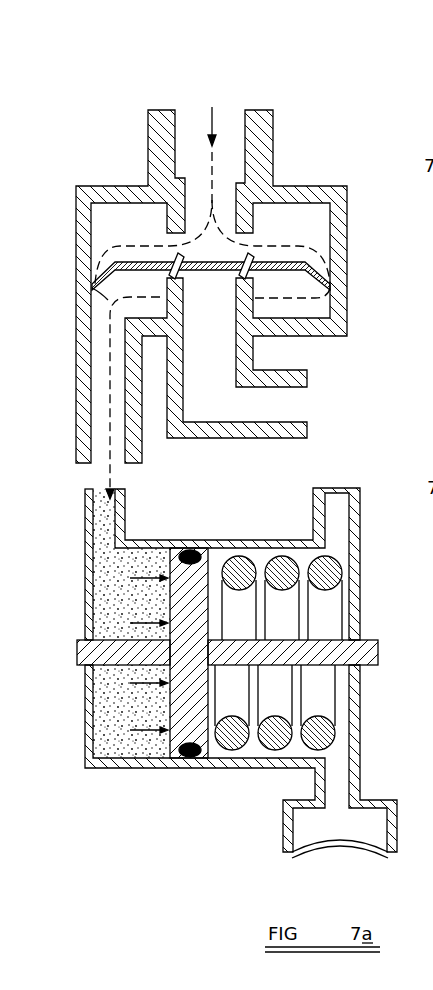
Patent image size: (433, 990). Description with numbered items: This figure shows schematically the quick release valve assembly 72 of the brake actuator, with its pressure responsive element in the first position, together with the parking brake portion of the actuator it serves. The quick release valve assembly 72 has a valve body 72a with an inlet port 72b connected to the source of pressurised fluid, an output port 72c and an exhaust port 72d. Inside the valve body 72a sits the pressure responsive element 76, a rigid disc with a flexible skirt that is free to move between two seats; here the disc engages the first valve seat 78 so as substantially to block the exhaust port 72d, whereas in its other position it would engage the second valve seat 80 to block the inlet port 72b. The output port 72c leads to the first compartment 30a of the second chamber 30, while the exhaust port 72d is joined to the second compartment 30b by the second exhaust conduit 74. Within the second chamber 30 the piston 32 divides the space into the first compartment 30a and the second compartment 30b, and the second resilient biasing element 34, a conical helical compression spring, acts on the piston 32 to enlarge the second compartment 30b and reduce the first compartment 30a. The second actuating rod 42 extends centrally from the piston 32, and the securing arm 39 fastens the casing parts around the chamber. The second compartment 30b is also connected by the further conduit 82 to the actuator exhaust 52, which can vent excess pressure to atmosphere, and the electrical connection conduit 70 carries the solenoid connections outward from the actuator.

The quick release valve assembly 72 is at (213, 270).
The valve body 72a is at (75, 232).
The inlet port 72b is at (160, 155).
The output port 72c is at (75, 417).
The exhaust port 72d is at (273, 368).
The first valve seat 78 is at (277, 262).
The second valve seat 80 is at (247, 238).
The pressure responsive element 76 is at (92, 288).
The second exhaust conduit 74 is at (355, 512).
The electrical connection conduit 70 is at (85, 523).
The second chamber 30 is at (233, 768).
The first compartment 30a is at (123, 757).
The second compartment 30b is at (257, 752).
The piston 32 is at (163, 758).
The second resilient biasing element 34 is at (283, 567).
The securing arm 39 is at (182, 550).
The second actuating rod 42 is at (77, 658).
The actuator exhaust 52 is at (283, 828).
The further conduit 82 is at (360, 747).